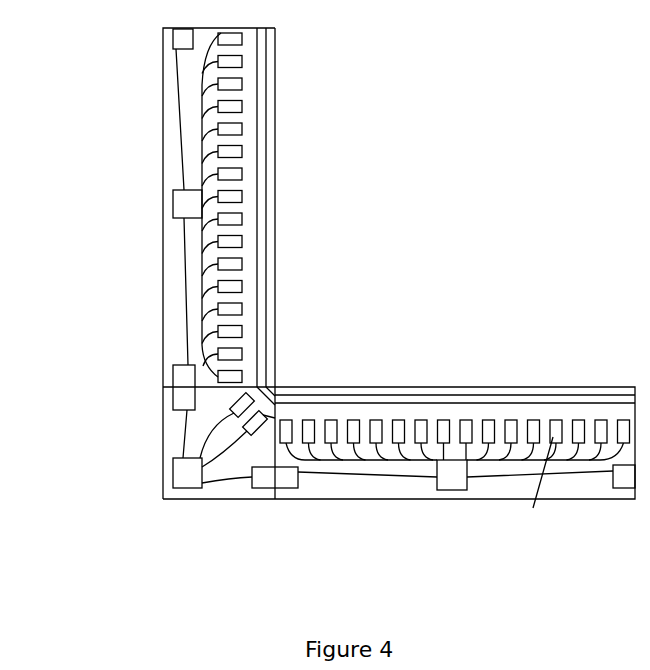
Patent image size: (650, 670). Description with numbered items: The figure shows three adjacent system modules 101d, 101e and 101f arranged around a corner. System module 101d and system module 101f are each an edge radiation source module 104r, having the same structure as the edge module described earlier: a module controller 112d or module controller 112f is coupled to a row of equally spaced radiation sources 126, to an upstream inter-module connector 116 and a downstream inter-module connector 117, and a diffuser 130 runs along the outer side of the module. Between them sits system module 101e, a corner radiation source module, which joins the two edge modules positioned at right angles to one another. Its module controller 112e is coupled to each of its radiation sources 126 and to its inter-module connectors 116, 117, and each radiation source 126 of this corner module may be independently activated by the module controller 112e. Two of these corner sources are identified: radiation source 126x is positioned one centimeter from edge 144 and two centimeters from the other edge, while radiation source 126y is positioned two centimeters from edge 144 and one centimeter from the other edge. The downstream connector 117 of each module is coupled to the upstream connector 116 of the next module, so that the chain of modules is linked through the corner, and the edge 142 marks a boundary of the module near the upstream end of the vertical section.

The system module 101d is at (167, 167).
The system module 101e is at (210, 493).
The system module 101f is at (378, 486).
The edge radiation source module 104r is at (173, 295).
The module controller 112d is at (173, 203).
The module controller 112e is at (183, 474).
The module controller 112f is at (452, 477).
The upstream inter-module connector 116 is at (185, 40).
The downstream inter-module connector 117 is at (173, 377).
The radiation source 126 is at (243, 198).
The radiation source 126x is at (258, 415).
The radiation source 126y is at (275, 417).
The diffuser 130 is at (268, 150).
The edge 142 is at (173, 34).
The edge 144 is at (243, 402).